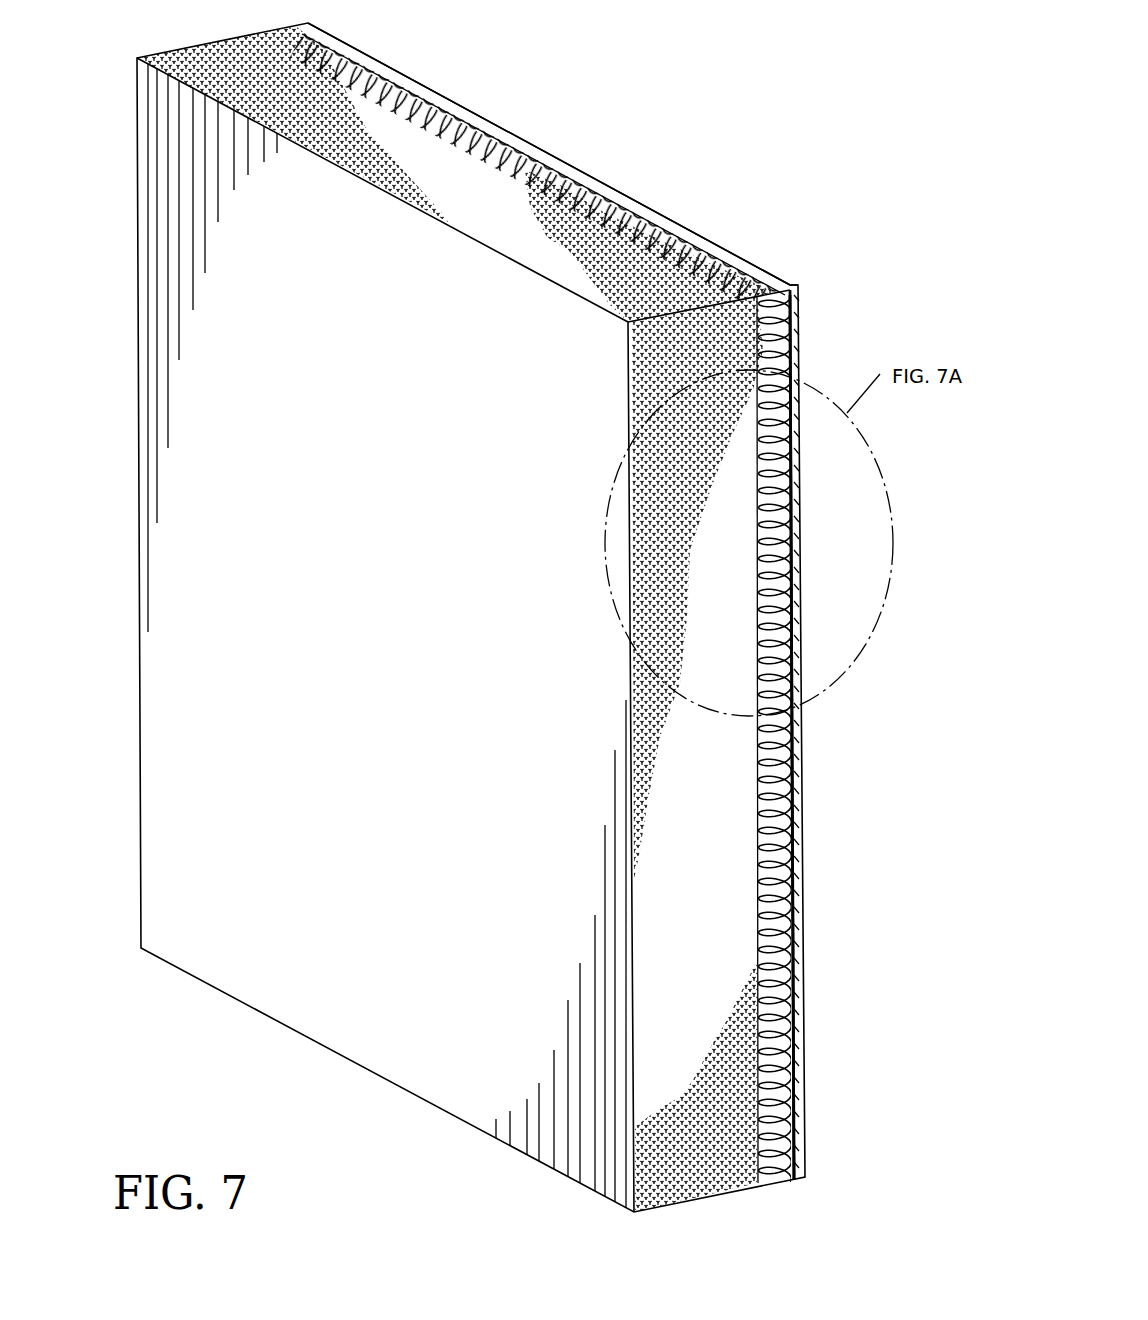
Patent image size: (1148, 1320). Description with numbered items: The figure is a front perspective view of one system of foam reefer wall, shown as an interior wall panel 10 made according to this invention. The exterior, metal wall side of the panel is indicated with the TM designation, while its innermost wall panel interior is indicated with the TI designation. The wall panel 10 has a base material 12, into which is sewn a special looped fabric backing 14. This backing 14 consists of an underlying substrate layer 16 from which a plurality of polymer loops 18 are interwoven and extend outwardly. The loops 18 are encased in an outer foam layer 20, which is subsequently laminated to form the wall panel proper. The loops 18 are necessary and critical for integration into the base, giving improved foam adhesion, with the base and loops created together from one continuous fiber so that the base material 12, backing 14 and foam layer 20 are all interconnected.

The interior wall panel 10 is at (135, 168).
The base material 12 is at (805, 1025).
The looped fabric backing 14 is at (793, 822).
The substrate layer 16 is at (795, 915).
The polymer loops 18 is at (758, 800).
The outer foam layer 20 is at (713, 989).
The exterior metal wall TM is at (382, 746).
The innermost wall panel interior TI is at (630, 192).